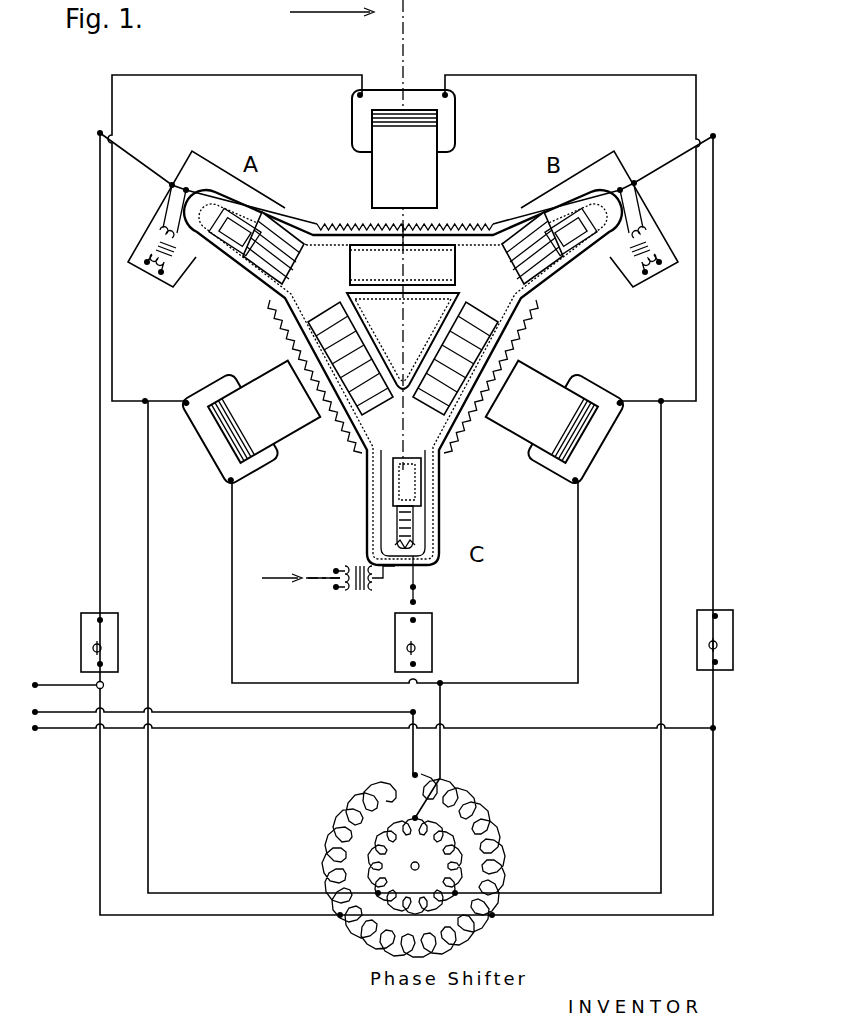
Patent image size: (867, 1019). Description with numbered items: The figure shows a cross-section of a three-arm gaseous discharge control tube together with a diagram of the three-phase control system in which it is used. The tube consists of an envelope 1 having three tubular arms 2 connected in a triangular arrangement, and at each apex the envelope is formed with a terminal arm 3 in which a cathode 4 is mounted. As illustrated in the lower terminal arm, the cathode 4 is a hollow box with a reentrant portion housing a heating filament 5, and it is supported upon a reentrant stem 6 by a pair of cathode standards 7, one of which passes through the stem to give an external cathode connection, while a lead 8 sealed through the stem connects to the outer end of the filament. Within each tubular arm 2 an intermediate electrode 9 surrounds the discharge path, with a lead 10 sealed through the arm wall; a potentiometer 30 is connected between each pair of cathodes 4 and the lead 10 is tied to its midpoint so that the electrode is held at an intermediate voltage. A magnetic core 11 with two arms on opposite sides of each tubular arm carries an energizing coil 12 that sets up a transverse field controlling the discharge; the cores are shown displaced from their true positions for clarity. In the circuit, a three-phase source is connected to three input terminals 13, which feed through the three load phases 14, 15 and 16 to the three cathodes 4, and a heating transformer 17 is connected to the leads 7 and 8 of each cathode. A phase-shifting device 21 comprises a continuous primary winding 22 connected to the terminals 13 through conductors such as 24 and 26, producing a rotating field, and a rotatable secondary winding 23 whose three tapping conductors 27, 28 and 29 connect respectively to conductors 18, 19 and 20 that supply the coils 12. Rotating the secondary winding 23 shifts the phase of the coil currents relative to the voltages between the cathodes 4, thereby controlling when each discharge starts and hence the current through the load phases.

The envelope 1 is at (366, 464).
The tubular arm 2 is at (324, 295).
The terminal arm 3 is at (258, 213).
The cathode 4 is at (290, 262).
The heating filament 5 is at (400, 456).
The reentrant stem 6 is at (232, 252).
The cathode standard 7 is at (283, 226).
The lead 8 is at (232, 205).
The intermediate electrode 9 is at (405, 317).
The lead 10 is at (318, 380).
The magnetic core 11 is at (425, 172).
The energizing coil 12 is at (358, 122).
The input terminal 13 is at (35, 728).
The load phase 14 is at (81, 638).
The load phase 15 is at (393, 643).
The load phase 16 is at (733, 646).
The heating transformer 17 is at (165, 240).
The conductor 18 is at (225, 75).
The conductor 19 is at (537, 75).
The conductor 20 is at (578, 622).
The phase-shifting device 21 is at (415, 864).
The primary winding 22 is at (330, 835).
The secondary winding 23 is at (465, 857).
The conductor 24 is at (248, 918).
The conductor 26 is at (597, 918).
The conductor 27 is at (150, 797).
The conductor 28 is at (413, 750).
The conductor 29 is at (440, 750).
The potentiometer 30 is at (445, 223).